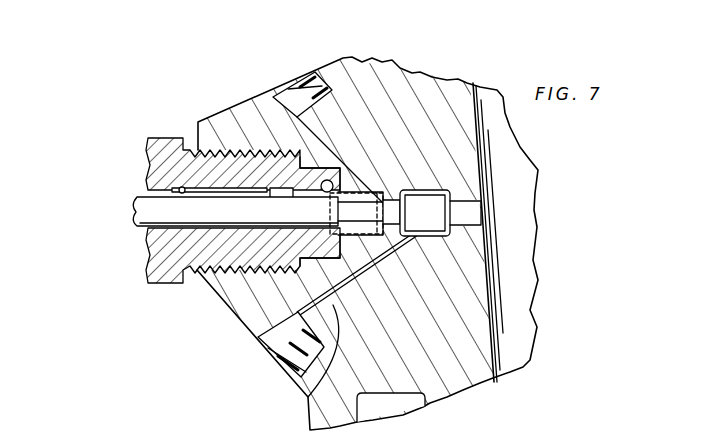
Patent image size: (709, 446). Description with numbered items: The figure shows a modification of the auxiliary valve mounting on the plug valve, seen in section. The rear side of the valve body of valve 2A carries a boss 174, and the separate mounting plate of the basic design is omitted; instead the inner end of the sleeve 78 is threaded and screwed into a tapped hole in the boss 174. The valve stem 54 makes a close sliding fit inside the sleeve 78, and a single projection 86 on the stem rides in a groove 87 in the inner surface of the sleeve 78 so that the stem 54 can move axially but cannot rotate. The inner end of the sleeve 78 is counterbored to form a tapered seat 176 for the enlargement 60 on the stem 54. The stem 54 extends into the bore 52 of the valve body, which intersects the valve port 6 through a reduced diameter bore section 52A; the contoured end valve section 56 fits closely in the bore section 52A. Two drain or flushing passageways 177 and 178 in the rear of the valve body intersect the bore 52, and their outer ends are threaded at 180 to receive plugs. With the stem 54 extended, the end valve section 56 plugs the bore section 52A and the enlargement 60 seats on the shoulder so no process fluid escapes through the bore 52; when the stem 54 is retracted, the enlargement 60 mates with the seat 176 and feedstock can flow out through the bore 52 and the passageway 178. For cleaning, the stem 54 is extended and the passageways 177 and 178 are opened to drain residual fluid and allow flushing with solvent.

The valve 2A is at (482, 380).
The valve port 6 is at (487, 267).
The bore 52 is at (436, 192).
The reduced diameter bore section 52A is at (470, 222).
The valve stem 54 is at (142, 210).
The end valve section 56 is at (468, 208).
The enlargement 60 is at (430, 207).
The sleeve 78 is at (163, 138).
The projection 86 is at (277, 187).
The groove 87 is at (187, 188).
The boss 174 is at (230, 315).
The tapered seat 176 is at (318, 193).
The drain or flushing passageway 177 is at (354, 140).
The drain or flushing passageway 178 is at (308, 395).
The threads 180 is at (273, 352).